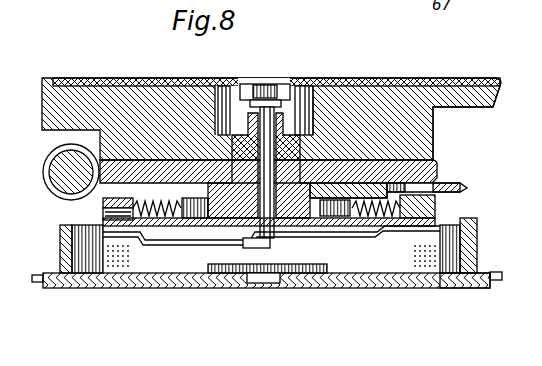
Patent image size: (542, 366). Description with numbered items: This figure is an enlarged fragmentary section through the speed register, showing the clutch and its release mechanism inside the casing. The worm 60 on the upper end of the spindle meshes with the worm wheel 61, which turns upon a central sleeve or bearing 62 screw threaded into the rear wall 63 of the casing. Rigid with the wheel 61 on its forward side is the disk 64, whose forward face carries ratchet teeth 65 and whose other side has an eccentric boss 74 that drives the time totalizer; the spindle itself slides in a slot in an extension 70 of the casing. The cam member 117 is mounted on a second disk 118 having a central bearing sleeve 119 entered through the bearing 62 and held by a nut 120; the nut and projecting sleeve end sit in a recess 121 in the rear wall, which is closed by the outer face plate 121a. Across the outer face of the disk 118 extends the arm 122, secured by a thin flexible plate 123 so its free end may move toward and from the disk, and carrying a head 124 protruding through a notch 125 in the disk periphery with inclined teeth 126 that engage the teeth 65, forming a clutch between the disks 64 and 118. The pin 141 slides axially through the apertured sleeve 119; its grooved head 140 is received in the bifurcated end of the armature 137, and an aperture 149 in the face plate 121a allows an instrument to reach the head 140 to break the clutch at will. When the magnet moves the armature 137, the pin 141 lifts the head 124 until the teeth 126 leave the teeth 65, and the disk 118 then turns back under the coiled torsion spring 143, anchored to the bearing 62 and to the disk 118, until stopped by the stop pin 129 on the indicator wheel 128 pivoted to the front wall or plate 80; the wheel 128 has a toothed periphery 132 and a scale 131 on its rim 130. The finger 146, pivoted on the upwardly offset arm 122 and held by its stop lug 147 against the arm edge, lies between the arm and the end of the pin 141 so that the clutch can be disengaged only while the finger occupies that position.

The outer face plate 121a is at (75, 78).
The worm wheel 61 is at (143, 160).
The central bearing sleeve 119 is at (193, 135).
The recess 121 is at (220, 86).
The armature 137 is at (244, 86).
The grooved head 140 is at (266, 86).
The aperture 149 is at (280, 99).
The pin 141 is at (298, 102).
The nut 120 is at (303, 128).
The central sleeve or bearing 62 is at (398, 97).
The rear wall 63 is at (416, 78).
The eccentrically disposed bearing or boss 74 is at (345, 180).
The extension of the casing 70 is at (458, 183).
The inclined teeth 126 is at (432, 208).
The head 124 is at (432, 221).
The rim 130 is at (478, 240).
The scale 131 is at (479, 260).
The worm 60 is at (44, 188).
The disk 64 is at (103, 207).
The ratchet teeth 65 is at (61, 249).
The toothed periphery 132 is at (36, 283).
The thin flexible plate 123 is at (118, 289).
The indicator wheel 128 is at (132, 240).
The second disk 118 is at (192, 240).
The stop lug 147 is at (253, 248).
The finger 146 is at (278, 273).
The arm 122 is at (300, 240).
The coiled torsion spring 143 is at (335, 245).
The front wall or plate 80 is at (345, 275).
The notch 125 is at (393, 232).
The stop pin 129 is at (437, 273).
The cam member 117 is at (460, 280).